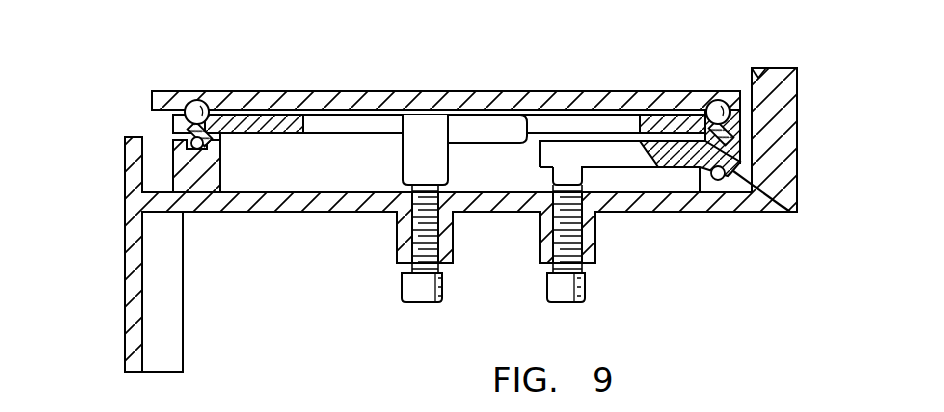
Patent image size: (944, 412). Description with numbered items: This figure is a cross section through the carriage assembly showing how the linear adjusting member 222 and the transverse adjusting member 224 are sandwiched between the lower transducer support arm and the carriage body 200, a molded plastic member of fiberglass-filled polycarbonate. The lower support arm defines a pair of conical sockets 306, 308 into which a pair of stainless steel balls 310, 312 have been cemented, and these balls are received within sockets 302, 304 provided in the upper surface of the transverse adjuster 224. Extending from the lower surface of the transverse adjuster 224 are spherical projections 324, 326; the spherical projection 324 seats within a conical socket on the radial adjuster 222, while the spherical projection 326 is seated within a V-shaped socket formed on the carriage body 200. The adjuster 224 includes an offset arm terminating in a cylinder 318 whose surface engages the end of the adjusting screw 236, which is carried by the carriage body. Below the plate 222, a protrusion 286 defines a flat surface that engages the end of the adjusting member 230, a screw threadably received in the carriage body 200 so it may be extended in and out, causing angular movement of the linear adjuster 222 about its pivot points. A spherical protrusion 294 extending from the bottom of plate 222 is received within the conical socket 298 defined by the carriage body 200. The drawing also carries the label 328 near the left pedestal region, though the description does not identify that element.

The carriage body 200 is at (118, 231).
The linear adjusting member 222 is at (607, 153).
The transverse adjusting member 224 is at (307, 128).
The adjusting member 230 is at (588, 290).
The adjusting member 236 is at (443, 290).
The protrusion 286 is at (548, 178).
The spherical protrusion 294 is at (712, 180).
The conical socket 298 is at (729, 180).
The socket 302 is at (737, 130).
The socket 304 is at (171, 123).
The conical socket 306 is at (713, 100).
The conical socket 308 is at (197, 100).
The ball 310 is at (712, 123).
The ball 312 is at (205, 126).
The cylinder 318 is at (410, 170).
The spherical projection 324 is at (722, 146).
The spherical projection 326 is at (193, 150).
The roller 328 is at (213, 149).